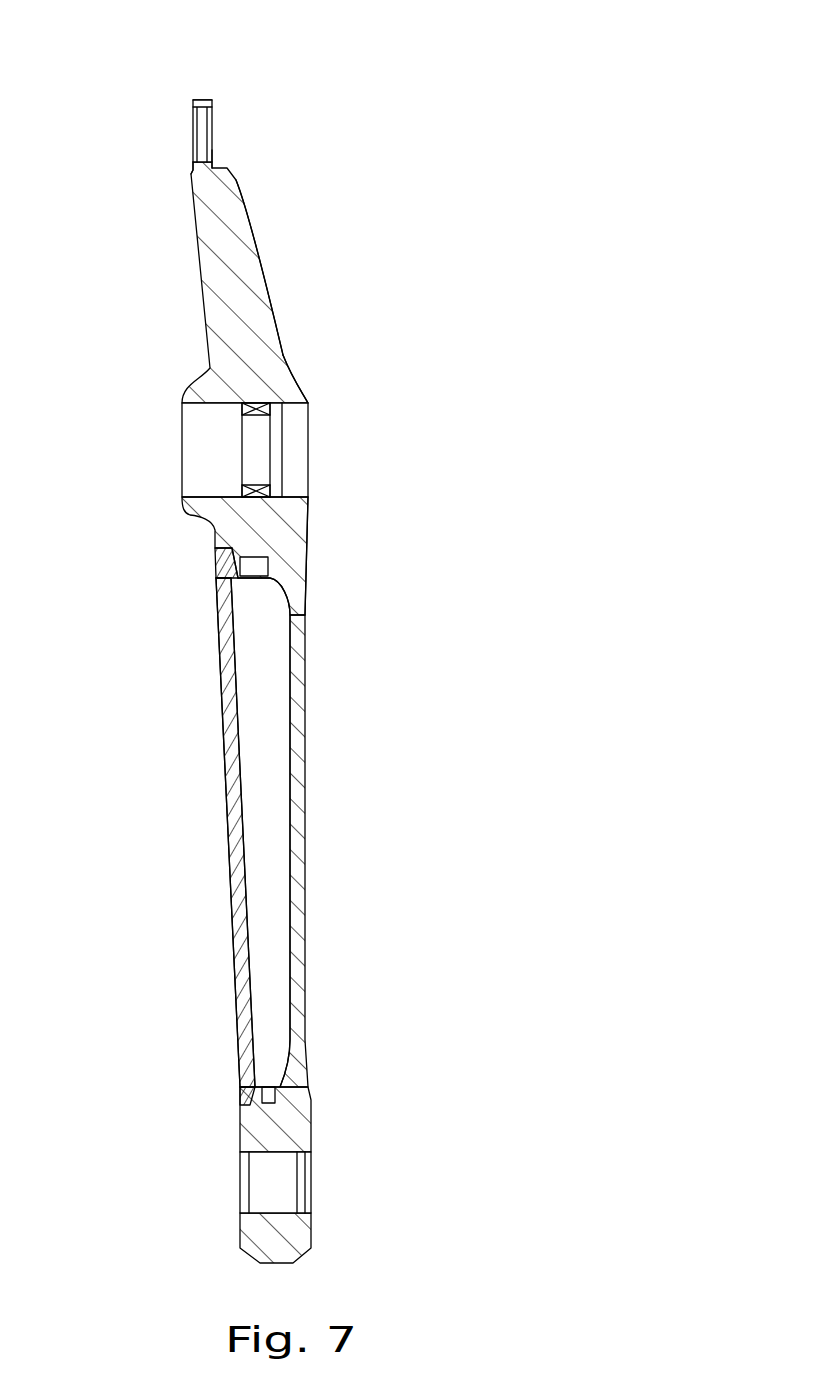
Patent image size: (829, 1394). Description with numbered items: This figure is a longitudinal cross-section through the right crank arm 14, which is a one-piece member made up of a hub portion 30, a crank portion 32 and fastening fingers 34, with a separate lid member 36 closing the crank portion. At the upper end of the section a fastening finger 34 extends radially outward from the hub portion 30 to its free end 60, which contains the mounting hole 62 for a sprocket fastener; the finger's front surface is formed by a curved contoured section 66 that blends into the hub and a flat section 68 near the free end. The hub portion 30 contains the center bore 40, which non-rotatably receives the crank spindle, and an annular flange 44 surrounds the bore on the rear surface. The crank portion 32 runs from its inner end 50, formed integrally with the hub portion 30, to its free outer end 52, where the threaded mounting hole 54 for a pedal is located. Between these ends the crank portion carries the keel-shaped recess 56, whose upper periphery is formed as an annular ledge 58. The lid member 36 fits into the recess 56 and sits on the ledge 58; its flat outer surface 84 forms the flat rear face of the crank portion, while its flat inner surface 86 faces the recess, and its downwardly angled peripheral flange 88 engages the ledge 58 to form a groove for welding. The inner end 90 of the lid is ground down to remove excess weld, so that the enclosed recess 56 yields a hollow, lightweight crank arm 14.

The right crank arm 14 is at (337, 50).
The hub portion 30 is at (300, 362).
The crank portion 32 is at (305, 830).
The fastening fingers 34 is at (238, 178).
The lid member 36 is at (223, 822).
The center bore 40 is at (203, 457).
The annular flange 44 is at (192, 515).
The inner end 50 is at (305, 640).
The free outer end 52 is at (307, 1065).
The mounting hole 54 is at (275, 1180).
The recess 56 is at (268, 912).
The annular ledge 58 is at (245, 556).
The free end 60 is at (191, 173).
The mounting hole 62 is at (193, 133).
The contoured section 66 is at (258, 260).
The flat section 68 is at (212, 157).
The flat outer surface 84 is at (223, 777).
The flat inner surface 86 is at (242, 713).
The peripheral flange 88 is at (222, 575).
The inner end 90 is at (219, 625).